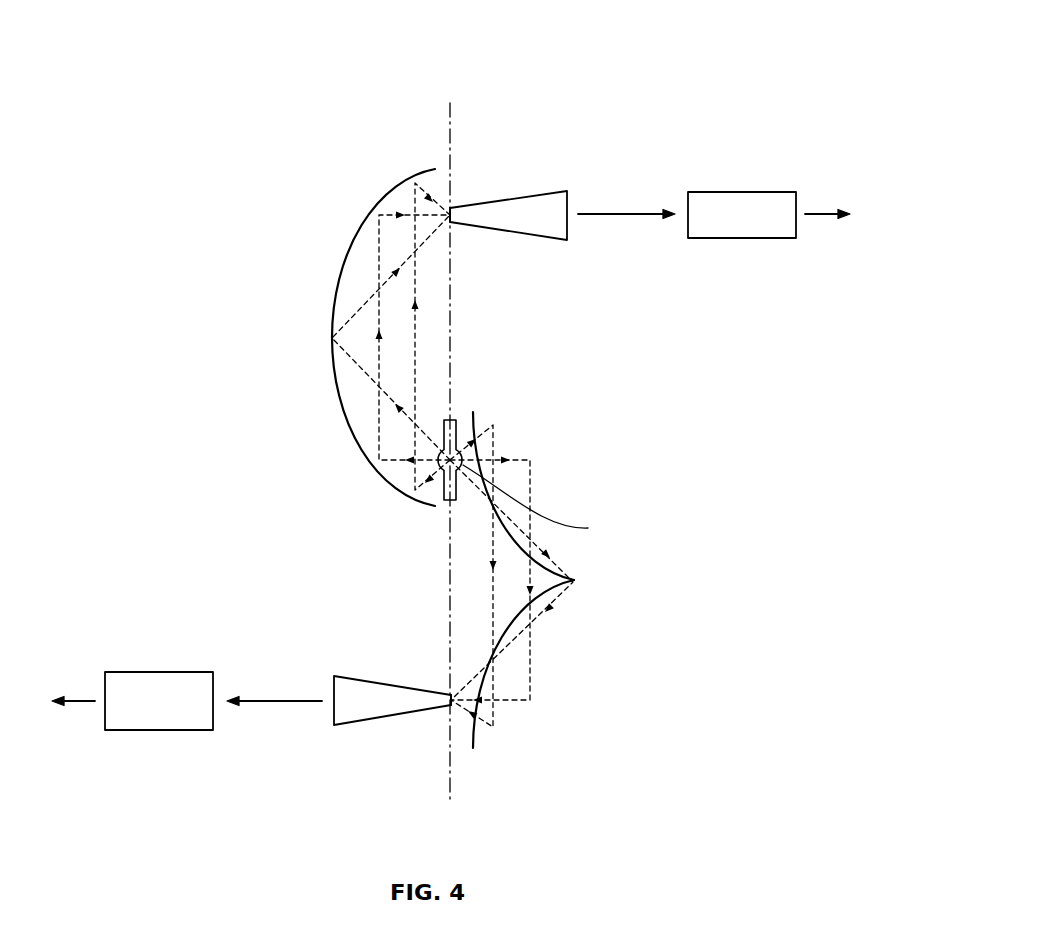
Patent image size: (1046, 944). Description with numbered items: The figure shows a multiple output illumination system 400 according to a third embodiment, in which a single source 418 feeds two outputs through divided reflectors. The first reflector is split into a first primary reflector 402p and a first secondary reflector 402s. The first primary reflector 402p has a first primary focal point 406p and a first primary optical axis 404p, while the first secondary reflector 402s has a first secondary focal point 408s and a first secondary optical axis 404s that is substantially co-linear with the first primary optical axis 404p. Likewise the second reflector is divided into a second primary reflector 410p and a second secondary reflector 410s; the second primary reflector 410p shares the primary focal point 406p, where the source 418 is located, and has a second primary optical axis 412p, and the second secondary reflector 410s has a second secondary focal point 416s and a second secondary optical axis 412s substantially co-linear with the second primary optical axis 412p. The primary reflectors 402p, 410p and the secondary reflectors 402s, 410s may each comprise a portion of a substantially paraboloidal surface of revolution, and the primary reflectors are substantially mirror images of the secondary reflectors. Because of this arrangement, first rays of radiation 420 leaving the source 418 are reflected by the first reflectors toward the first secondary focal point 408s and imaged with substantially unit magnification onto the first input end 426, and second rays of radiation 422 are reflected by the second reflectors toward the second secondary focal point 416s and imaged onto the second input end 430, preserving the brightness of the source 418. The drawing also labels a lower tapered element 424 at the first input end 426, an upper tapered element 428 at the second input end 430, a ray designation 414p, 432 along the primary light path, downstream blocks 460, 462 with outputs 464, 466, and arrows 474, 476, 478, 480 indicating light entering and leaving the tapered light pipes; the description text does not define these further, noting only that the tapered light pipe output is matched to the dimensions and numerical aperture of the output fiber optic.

The multiple output illumination system 400 is at (205, 48).
The first primary reflector 402p is at (550, 492).
The first secondary reflector 402s is at (557, 655).
The first primary optical axis 404p is at (529, 625).
The first secondary optical axis 404s is at (453, 777).
The first primary focal point 406p is at (614, 503).
The first secondary focal point 408s is at (446, 704).
The second primary reflector 410p is at (360, 433).
The second secondary reflector 410s is at (360, 250).
The second primary optical axis 412p is at (371, 264).
The second secondary optical axis 412s is at (448, 115).
The p-polarized light 414p is at (614, 503).
The second secondary focal point 416s is at (534, 194).
The source 418 is at (444, 506).
The first rays of radiation 420 is at (493, 610).
The second rays of radiation 422 is at (415, 333).
The lower light integrator (tapered light pipe) 424 is at (363, 691).
The first input end 426 is at (365, 728).
The upper light integrator (tapered light pipe) 428 is at (549, 222).
The second input end 430 is at (460, 211).
The light reflected by lower reflector 432 is at (614, 503).
The lower optical module 460 is at (184, 684).
The upper optical module 462 is at (736, 205).
The lower output 464 is at (41, 693).
The upper output 466 is at (860, 204).
The light entering lower light pipe 474 is at (330, 709).
The light entering upper light pipe 476 is at (572, 224).
The light output from lower light pipe 478 is at (274, 699).
The light output from upper light pipe 480 is at (652, 212).